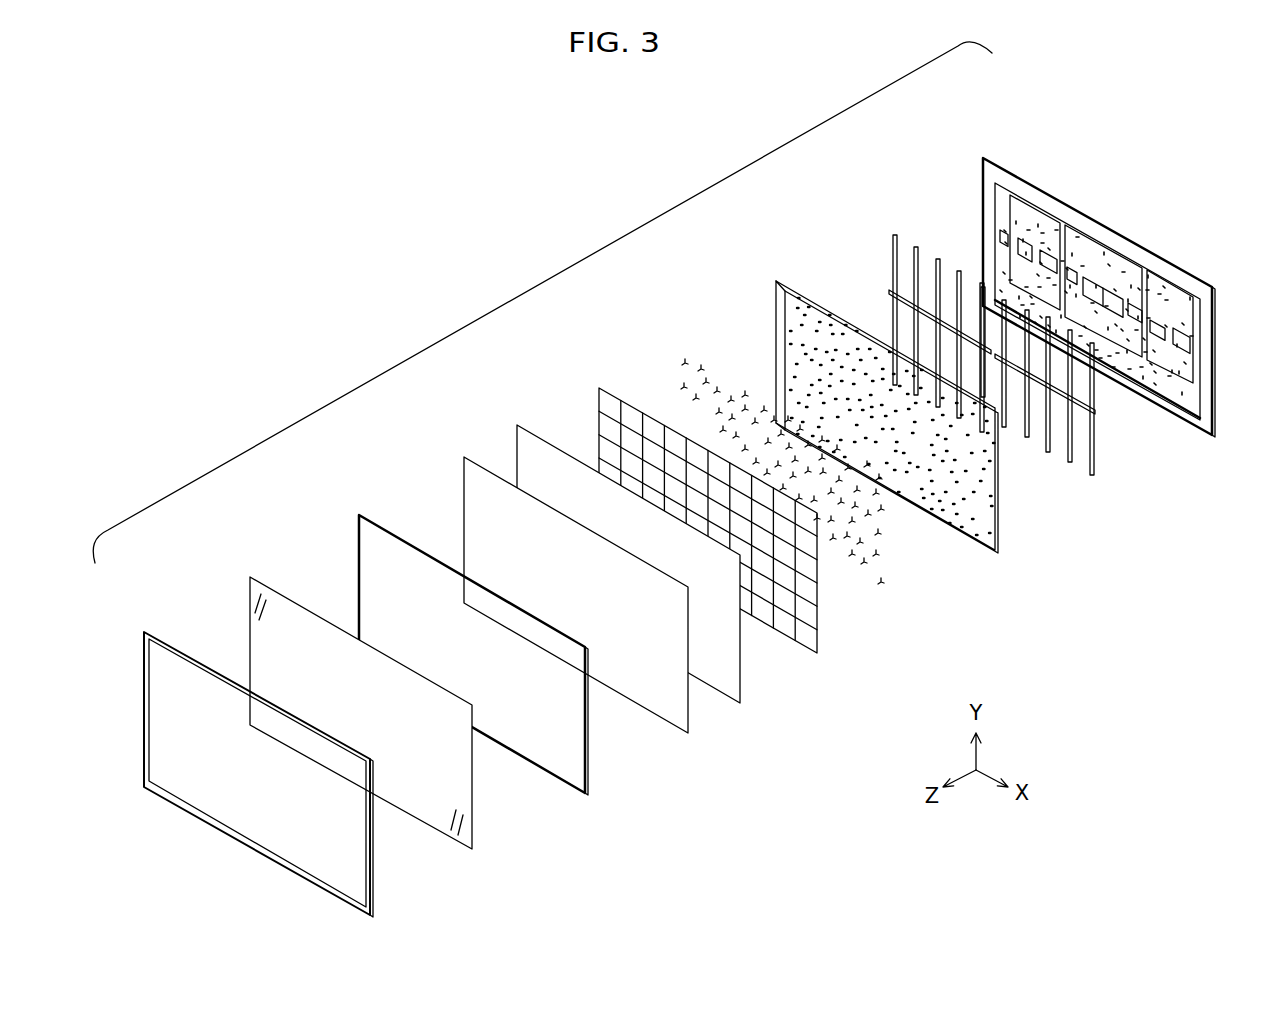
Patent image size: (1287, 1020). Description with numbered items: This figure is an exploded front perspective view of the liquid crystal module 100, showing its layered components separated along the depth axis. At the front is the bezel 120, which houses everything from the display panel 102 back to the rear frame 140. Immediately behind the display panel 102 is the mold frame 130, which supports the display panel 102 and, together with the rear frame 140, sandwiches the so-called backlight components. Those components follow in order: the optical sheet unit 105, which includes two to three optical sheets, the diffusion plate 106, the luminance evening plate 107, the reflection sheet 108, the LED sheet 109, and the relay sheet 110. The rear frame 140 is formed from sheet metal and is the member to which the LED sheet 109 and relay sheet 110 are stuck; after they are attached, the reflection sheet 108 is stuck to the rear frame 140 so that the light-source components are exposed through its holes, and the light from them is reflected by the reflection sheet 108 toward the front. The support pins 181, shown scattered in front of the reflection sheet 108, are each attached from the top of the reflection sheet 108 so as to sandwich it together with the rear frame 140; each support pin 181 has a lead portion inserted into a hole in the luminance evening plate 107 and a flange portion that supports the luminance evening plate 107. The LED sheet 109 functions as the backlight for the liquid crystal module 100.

The liquid crystal module 100 is at (552, 277).
The display panel 102 is at (261, 583).
The optical sheet unit 105 is at (464, 457).
The diffusion plate 106 is at (517, 425).
The luminance evening plate 107 is at (599, 388).
The reflection sheet 108 is at (777, 281).
The LED sheet 109 is at (893, 235).
The relay sheet 110 is at (1063, 397).
The bezel 120 is at (158, 640).
The mold frame 130 is at (361, 515).
The rear frame 140 is at (983, 155).
The support pin 181 is at (692, 352).